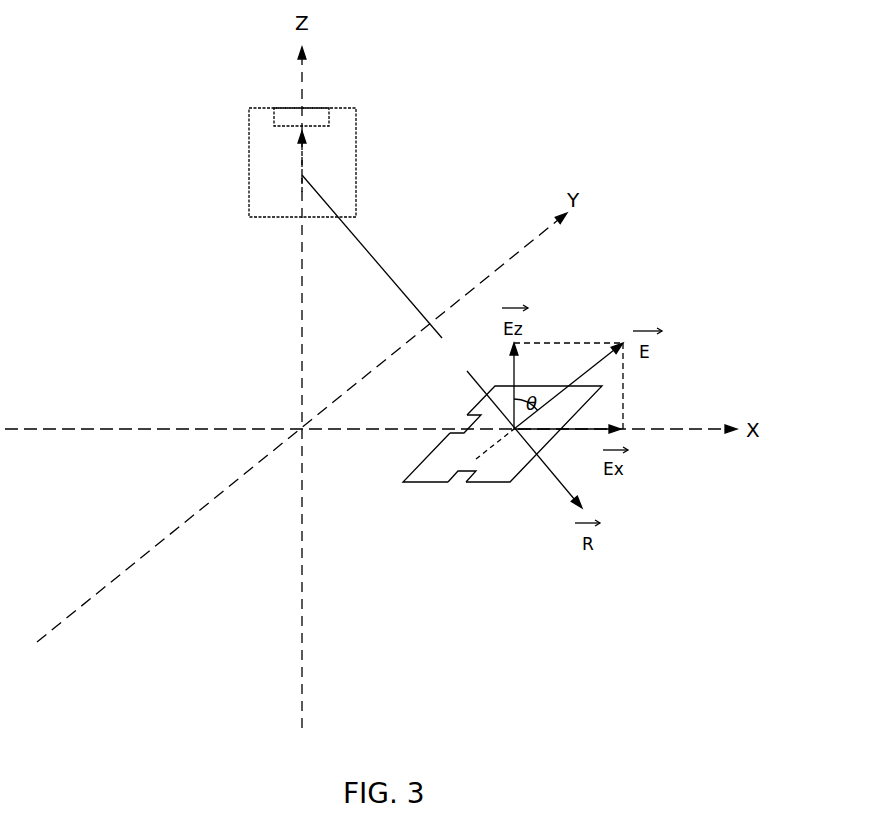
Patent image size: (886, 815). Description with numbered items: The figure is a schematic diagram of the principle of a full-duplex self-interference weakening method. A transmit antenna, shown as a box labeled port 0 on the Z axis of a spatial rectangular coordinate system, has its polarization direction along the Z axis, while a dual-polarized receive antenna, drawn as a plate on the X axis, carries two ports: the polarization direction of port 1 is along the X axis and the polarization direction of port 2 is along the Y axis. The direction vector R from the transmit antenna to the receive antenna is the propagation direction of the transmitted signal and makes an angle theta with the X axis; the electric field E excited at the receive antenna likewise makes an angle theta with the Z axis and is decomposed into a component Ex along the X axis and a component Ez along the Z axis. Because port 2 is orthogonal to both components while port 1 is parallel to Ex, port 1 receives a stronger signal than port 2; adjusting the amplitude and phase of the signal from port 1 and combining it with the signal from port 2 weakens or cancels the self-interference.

The Port 0 (transmitting antenna port) 0 is at (302, 118).
The port 1 is at (466, 419).
The port 2 is at (476, 465).